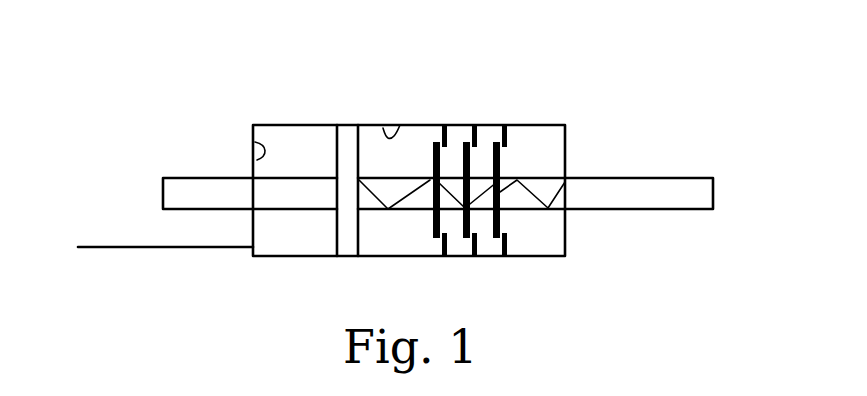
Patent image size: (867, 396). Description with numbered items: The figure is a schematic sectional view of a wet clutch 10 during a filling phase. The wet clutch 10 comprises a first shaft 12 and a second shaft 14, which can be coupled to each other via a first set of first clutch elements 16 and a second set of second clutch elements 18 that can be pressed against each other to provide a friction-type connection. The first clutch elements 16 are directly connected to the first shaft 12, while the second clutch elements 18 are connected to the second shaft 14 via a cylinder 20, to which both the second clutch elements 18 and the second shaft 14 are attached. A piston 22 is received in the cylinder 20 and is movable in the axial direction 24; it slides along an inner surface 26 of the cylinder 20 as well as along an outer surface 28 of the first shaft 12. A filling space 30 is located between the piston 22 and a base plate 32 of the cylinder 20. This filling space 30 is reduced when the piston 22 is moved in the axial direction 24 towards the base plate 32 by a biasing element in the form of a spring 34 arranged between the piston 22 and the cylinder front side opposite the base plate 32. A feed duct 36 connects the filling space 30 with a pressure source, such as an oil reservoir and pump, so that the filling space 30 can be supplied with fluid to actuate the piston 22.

The wet clutch 10 is at (190, 90).
The first shaft 12 is at (218, 194).
The second shaft 14 is at (655, 190).
The first clutch elements 16 is at (432, 222).
The second clutch elements 18 is at (447, 136).
The cylinder 20 is at (280, 125).
The piston 22 is at (337, 239).
The axial direction 24 is at (392, 97).
The inner surface 26 is at (401, 125).
The outer surface 28 is at (279, 228).
The filling space 30 is at (320, 165).
The base plate 32 is at (253, 143).
The spring 34 is at (532, 192).
The feed duct 36 is at (148, 252).